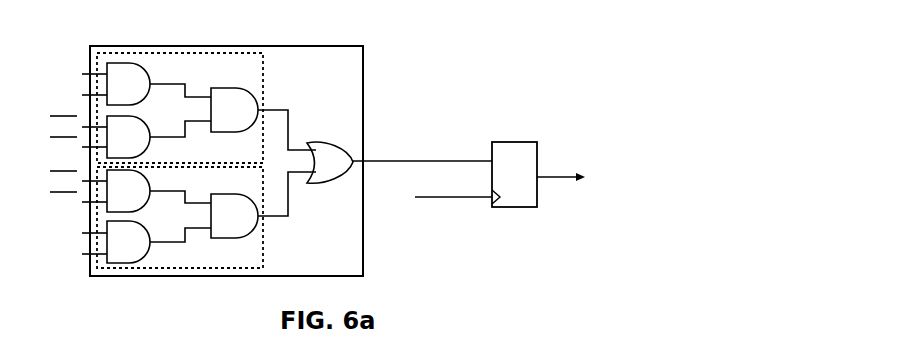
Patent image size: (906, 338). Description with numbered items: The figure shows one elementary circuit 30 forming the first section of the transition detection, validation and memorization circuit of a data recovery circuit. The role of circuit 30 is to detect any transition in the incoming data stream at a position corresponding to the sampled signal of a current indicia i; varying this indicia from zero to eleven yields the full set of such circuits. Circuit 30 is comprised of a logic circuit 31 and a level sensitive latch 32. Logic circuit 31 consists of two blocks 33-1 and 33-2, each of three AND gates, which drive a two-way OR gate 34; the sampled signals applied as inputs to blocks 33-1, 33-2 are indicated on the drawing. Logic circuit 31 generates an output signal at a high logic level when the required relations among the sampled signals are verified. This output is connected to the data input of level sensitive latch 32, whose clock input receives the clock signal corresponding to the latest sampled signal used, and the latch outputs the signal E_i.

The circuit 30 is at (491, 59).
The logic circuit 31 is at (337, 46).
The level sensitive latch 32 is at (528, 142).
The block of three AND gates 33-1 is at (263, 79).
The block of three AND gates 33-2 is at (265, 248).
The two-way OR gate 34 is at (329, 141).